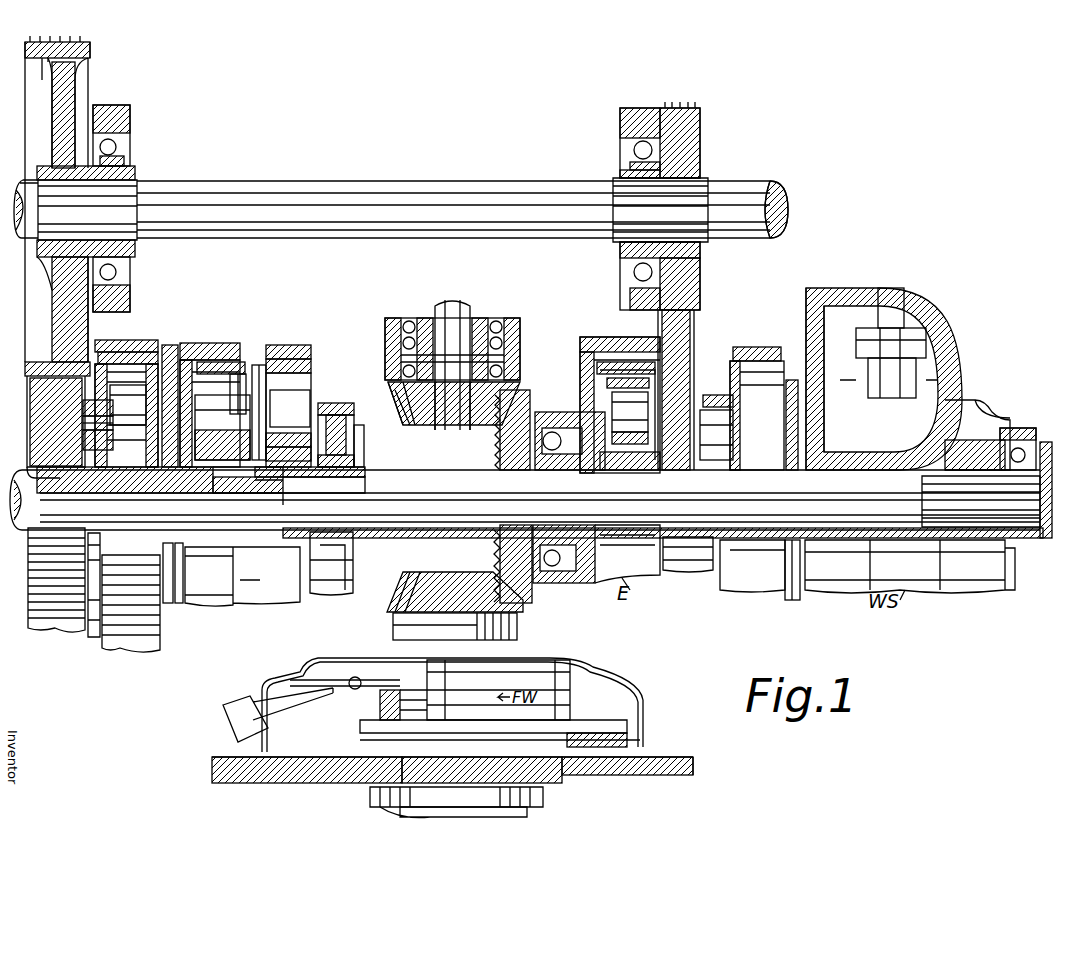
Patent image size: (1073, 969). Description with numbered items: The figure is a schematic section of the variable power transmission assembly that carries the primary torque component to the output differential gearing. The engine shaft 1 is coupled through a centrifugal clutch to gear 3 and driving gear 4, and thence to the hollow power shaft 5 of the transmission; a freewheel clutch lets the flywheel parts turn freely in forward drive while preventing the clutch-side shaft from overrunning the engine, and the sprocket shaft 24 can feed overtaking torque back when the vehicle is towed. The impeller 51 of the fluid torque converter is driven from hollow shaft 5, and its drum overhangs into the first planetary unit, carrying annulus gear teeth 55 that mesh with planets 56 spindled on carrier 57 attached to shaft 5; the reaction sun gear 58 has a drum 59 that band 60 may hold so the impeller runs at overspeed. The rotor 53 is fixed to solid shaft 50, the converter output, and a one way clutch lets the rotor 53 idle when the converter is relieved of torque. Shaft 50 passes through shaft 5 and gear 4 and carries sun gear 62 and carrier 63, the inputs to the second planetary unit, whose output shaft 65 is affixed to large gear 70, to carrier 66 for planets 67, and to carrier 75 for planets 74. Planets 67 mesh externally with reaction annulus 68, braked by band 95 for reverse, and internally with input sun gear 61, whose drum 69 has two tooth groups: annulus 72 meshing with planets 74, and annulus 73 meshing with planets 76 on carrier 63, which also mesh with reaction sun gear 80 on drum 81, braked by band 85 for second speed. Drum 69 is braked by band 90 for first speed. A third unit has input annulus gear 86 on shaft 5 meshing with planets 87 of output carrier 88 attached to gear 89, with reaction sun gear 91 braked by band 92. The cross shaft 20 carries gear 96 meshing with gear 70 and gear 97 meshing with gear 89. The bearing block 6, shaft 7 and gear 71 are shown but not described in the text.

The engine shaft 1 is at (430, 662).
The gear 3 is at (400, 602).
The driving gear 4 is at (528, 606).
The power shaft 5 is at (492, 476).
The bearing block 6 is at (406, 426).
The vertical shaft 7 is at (460, 325).
The cross shaft 20 is at (496, 183).
The sprocket shaft 24 is at (228, 756).
The solid shaft 50 is at (428, 518).
The impeller 51 is at (830, 362).
The rotor 53 is at (940, 390).
The annulus gear teeth 55 is at (793, 385).
The planets 56 is at (722, 395).
The carrier 57 is at (792, 572).
The reaction sun gear 58 is at (716, 420).
The drum 59 is at (736, 365).
The band 60 is at (756, 347).
The input sun gear 61 is at (92, 445).
The sun gear 62 is at (222, 427).
The carrier 63 is at (259, 365).
The output shaft 65 is at (206, 556).
The carrier 66 is at (84, 410).
The planets 67 is at (88, 428).
The reaction annulus 68 is at (108, 352).
The drum 69 is at (137, 404).
The large gear 70 is at (55, 397).
The gear 71 is at (150, 648).
The annulus 72 is at (240, 374).
The annulus 73 is at (284, 346).
The planets 74 is at (222, 362).
The carrier 75 is at (170, 352).
The planets 76 is at (303, 375).
The reaction sun gear 80 is at (293, 476).
The drum 81 is at (360, 432).
The band 85 is at (338, 404).
The input annulus gear 86 is at (600, 368).
The planets 87 is at (612, 383).
The output carrier 88 is at (620, 395).
The gear 89 is at (690, 325).
The band 90 is at (196, 343).
The reaction sun gear 91 is at (626, 456).
The band 92 is at (592, 338).
The band 95 is at (125, 342).
The gear 96 is at (82, 62).
The gear 97 is at (700, 120).